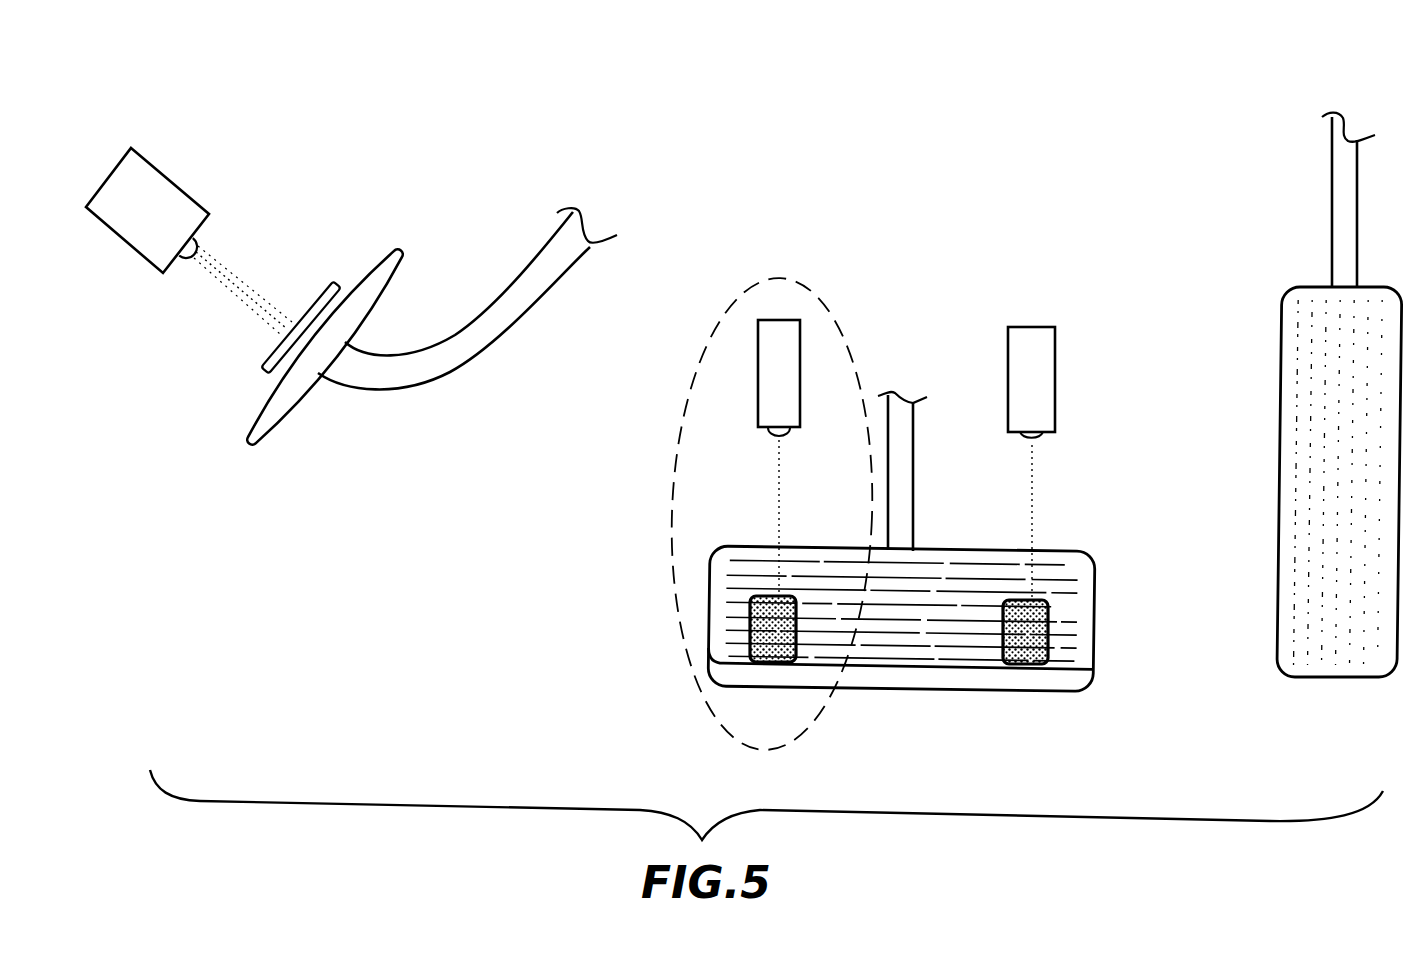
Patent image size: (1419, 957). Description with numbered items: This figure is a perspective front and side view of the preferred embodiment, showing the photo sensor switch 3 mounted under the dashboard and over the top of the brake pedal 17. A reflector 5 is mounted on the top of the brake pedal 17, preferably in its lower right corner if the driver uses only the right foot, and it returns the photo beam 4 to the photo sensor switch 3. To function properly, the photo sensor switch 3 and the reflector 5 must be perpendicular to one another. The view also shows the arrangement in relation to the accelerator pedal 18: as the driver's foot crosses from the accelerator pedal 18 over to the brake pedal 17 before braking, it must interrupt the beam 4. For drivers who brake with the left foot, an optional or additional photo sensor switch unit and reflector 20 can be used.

The photo sensor switch unit 3 is at (121, 160).
The photo beam 4 is at (227, 281).
The reflector 5 is at (268, 370).
The brake pedal 17 is at (294, 391).
The accelerator pedal 18 is at (1325, 668).
The optional or additional photo sensor switch unit and reflector 20 is at (672, 518).